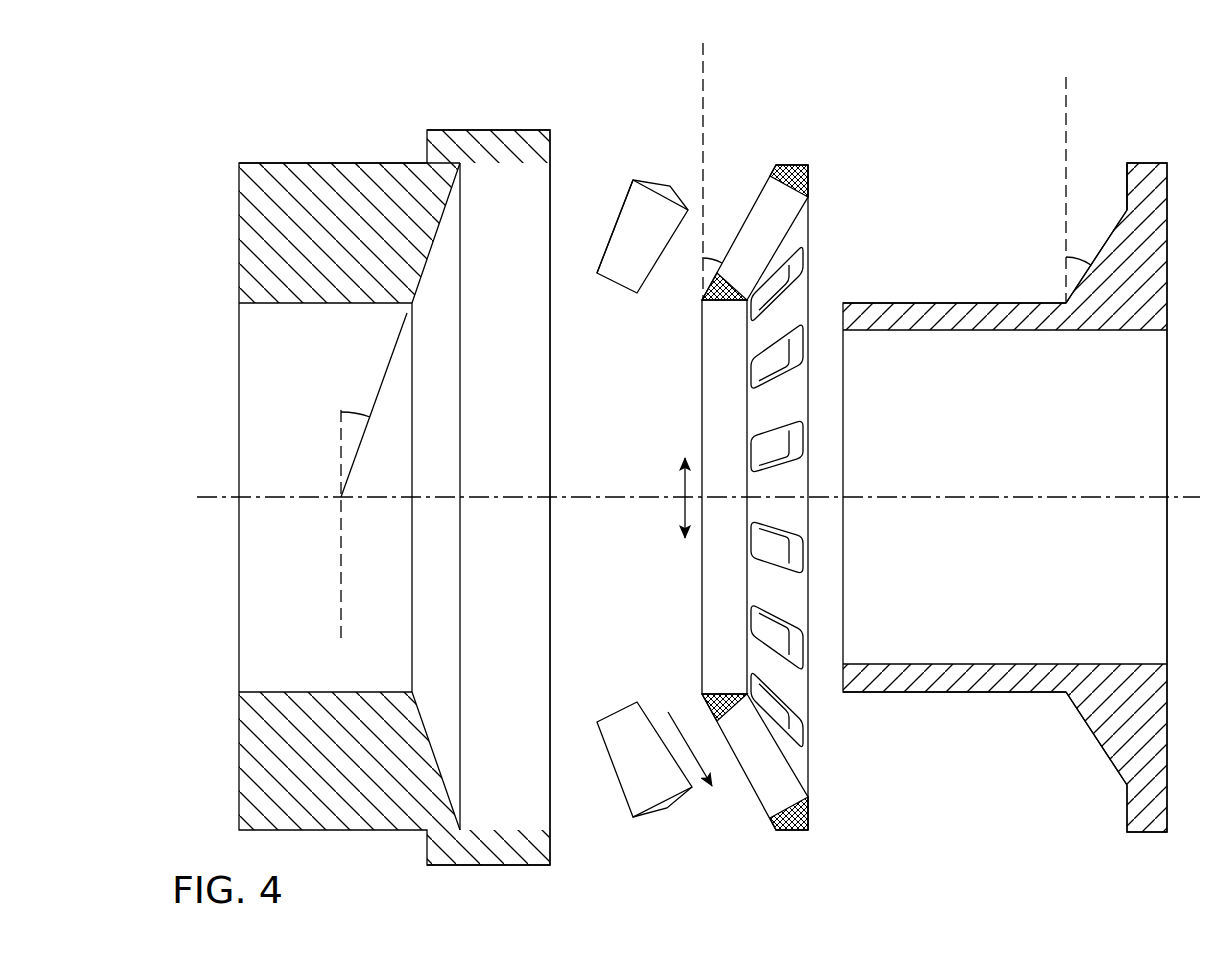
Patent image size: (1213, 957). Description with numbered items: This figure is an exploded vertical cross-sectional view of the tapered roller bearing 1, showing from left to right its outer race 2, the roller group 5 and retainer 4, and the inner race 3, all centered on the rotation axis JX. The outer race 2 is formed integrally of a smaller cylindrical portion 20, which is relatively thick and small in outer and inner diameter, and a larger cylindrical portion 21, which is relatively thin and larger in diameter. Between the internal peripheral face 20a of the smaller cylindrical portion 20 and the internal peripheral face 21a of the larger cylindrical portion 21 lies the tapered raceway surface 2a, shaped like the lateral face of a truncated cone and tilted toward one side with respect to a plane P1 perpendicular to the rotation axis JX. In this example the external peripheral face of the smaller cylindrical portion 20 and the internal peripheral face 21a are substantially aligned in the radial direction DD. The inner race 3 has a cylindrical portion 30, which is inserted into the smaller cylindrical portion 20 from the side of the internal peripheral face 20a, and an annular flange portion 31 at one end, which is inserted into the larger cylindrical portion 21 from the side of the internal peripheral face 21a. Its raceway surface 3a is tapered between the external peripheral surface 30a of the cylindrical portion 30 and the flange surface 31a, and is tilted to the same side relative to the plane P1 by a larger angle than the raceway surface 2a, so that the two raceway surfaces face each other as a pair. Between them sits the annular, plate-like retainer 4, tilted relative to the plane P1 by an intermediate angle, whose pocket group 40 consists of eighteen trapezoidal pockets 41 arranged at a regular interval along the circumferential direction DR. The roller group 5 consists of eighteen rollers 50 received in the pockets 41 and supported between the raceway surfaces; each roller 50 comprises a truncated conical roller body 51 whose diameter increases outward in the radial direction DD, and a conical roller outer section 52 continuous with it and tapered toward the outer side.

The tapered roller bearing 1 is at (997, 68).
The outer race 2 is at (394, 465).
The smaller cylindrical portion 20 is at (345, 163).
The internal peripheral face of the smaller cylindrical portion 20a is at (327, 303).
The larger cylindrical portion 21 is at (452, 130).
The internal peripheral face of the larger cylindrical portion 21a is at (503, 163).
The raceway surface 2a is at (425, 267).
The plane P1 is at (342, 575).
The rotation axis JX is at (612, 493).
The circumferential direction DR is at (683, 480).
The radial direction DD is at (699, 749).
The roller group 5 is at (634, 442).
The roller 50 is at (622, 292).
The roller body 51 is at (620, 210).
The roller outer section 52 is at (655, 184).
The retainer 4 is at (769, 468).
The pocket group 40 is at (743, 221).
The pocket 41 is at (765, 187).
The inner race 3 is at (1016, 464).
The cylindrical portion 30 is at (917, 303).
The external peripheral surface of the cylindrical portion 30a is at (1005, 303).
The flange portion 31 is at (1132, 163).
The flange surface 31a is at (1127, 185).
The raceway surface 3a is at (1120, 220).